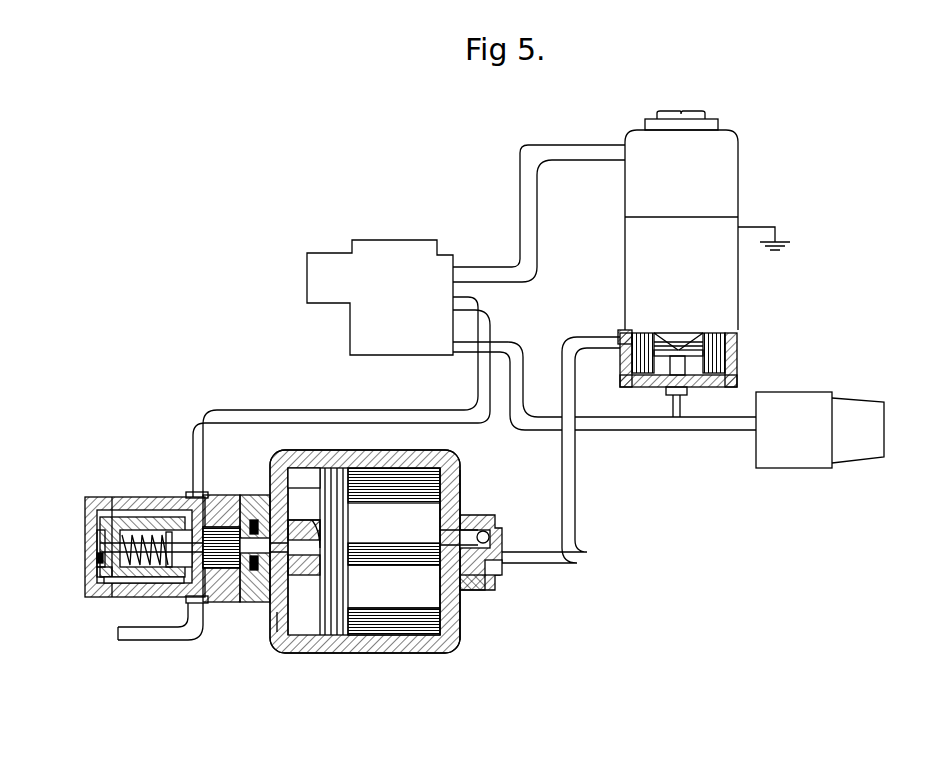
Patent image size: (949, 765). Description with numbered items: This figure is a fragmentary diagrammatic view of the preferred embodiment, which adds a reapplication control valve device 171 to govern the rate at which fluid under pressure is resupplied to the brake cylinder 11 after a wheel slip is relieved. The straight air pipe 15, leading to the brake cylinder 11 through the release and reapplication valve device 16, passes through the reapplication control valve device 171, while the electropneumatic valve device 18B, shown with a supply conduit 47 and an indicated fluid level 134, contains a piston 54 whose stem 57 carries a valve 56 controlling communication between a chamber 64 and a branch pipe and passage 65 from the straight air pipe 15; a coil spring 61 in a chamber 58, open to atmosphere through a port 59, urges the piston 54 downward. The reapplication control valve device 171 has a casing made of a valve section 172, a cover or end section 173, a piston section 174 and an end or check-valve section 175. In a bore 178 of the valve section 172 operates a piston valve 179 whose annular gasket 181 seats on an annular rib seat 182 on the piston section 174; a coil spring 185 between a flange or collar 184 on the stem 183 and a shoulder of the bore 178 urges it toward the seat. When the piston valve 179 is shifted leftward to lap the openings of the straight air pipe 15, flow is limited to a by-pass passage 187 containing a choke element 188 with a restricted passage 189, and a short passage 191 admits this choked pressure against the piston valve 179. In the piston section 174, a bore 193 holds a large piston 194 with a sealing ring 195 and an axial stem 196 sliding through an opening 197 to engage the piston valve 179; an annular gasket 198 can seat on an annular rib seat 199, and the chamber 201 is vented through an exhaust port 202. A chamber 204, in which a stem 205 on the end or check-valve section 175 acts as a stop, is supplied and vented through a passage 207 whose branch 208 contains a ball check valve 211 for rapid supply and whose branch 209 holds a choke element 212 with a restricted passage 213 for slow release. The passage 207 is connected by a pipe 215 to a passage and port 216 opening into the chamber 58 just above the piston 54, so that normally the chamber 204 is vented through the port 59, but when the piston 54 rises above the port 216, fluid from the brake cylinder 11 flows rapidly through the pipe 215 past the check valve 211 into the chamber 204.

The electropneumatic valve device 18B is at (727, 128).
The fluid level 134 is at (625, 223).
The supply conduit 47 is at (528, 224).
The release and reapplication valve device 16 is at (371, 240).
The straight air pipe 15 is at (268, 415).
The brake cylinder 11 is at (801, 392).
The pipe 215 is at (576, 471).
The piston 54 is at (620, 366).
The chamber 64 is at (737, 367).
The chamber 58 is at (620, 333).
The port 59 is at (735, 333).
The passage and port 216 is at (670, 345).
The coil spring 61 is at (737, 345).
The stem 57 is at (687, 364).
The valve 56 is at (665, 386).
The branch pipe and passage 65 is at (683, 403).
The cover or end section 173 is at (102, 500).
The valve section 172 is at (125, 590).
The flange or collar 184 is at (170, 527).
The passage 187 is at (97, 594).
The short passage 191 is at (102, 543).
The coil spring 185 is at (110, 548).
The choke element 188 is at (102, 557).
The restricted passage 189 is at (112, 577).
The bore 178 is at (178, 582).
The stem 183 is at (220, 515).
The piston valve 179 is at (217, 568).
The annular gasket 181 is at (252, 520).
The annular rib seat 182 is at (265, 587).
The exhaust port 202 is at (277, 627).
The piston section 174 is at (385, 457).
The reapplication control valve device 171 is at (306, 452).
The end or check-valve section 175 is at (462, 475).
The annular gasket 198 is at (335, 530).
The branch 208 is at (445, 535).
The stem 205 is at (380, 553).
The choke element 212 is at (448, 572).
The restricted passage 213 is at (443, 593).
The sealing ring 195 is at (313, 640).
The piston 194 is at (345, 627).
The bore 193 is at (397, 633).
The chamber 201 is at (295, 638).
The annular rib seat 199 is at (306, 483).
The axial stem 196 is at (298, 545).
The opening 197 is at (305, 557).
The chamber 204 is at (460, 488).
The check valve 211 is at (498, 531).
The passage 207 is at (505, 575).
The branch 209 is at (487, 590).